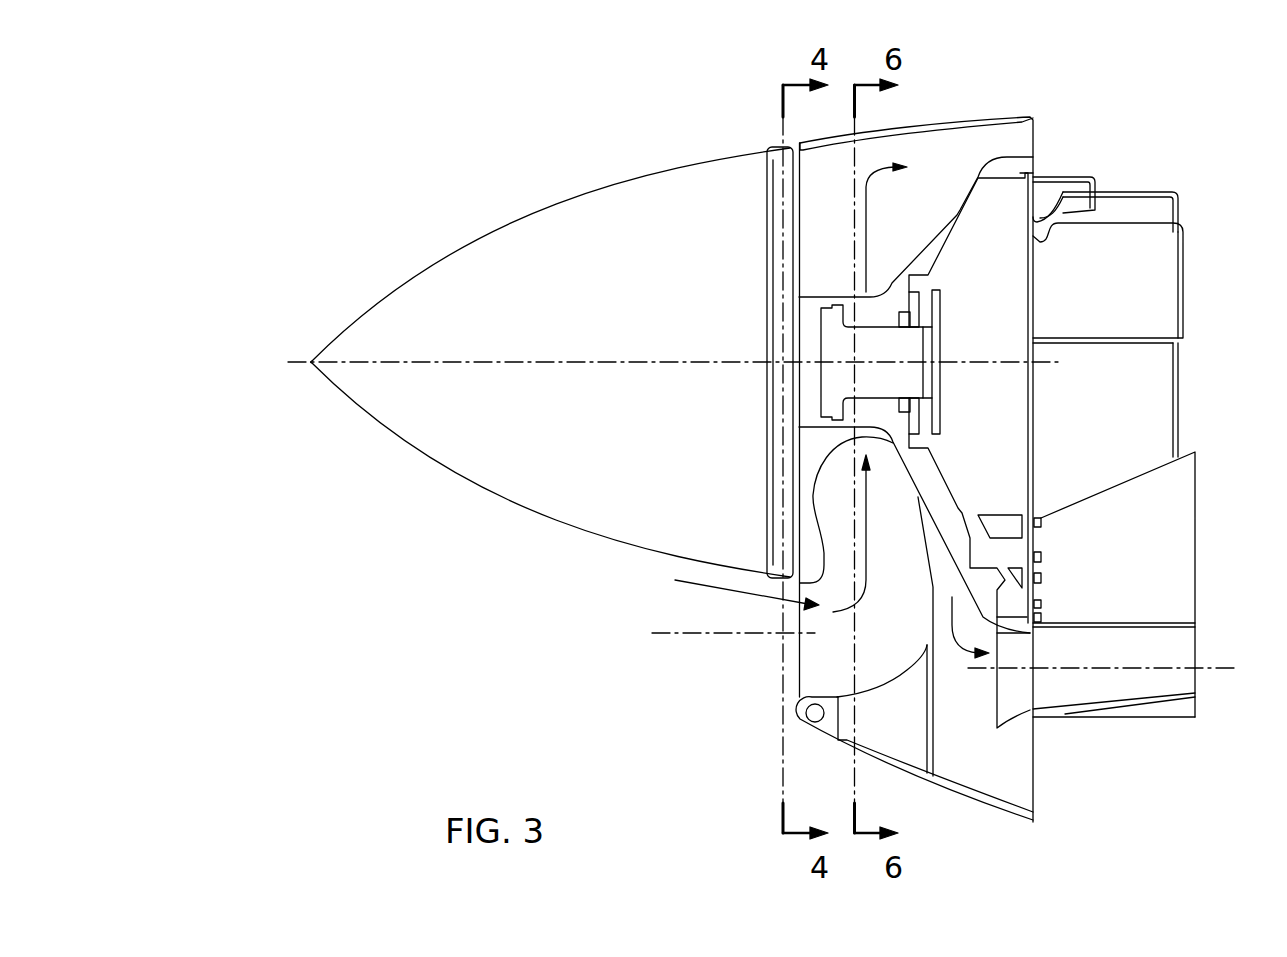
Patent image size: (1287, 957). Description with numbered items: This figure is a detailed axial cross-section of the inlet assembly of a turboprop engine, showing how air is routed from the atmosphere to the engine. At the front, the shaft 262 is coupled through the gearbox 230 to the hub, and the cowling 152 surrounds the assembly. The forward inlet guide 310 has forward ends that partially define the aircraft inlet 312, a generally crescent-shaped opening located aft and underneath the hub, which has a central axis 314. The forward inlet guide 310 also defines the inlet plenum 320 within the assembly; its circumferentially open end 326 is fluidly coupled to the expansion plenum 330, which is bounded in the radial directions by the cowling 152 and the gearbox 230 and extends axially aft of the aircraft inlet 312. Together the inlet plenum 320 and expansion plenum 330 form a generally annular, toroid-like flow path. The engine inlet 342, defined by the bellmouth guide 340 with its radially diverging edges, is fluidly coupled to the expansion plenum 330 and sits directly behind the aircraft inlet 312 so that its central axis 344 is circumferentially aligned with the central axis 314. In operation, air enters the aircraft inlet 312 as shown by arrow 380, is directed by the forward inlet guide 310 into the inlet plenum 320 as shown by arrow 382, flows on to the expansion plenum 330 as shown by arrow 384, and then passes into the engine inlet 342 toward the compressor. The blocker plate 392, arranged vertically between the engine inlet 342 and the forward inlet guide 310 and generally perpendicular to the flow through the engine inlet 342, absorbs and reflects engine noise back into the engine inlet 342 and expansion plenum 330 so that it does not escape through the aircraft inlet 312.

The cowling 152 is at (980, 116).
The gearbox 230 is at (943, 317).
The shaft 262 is at (493, 235).
The forward inlet guide 310 is at (903, 678).
The aircraft inlet 312 is at (798, 674).
The central axis of the aircraft inlet 314 is at (673, 634).
The inlet plenum 320 is at (920, 606).
The open end 326 is at (975, 620).
The expansion plenum 330 is at (848, 215).
The bellmouth guide 340 is at (1005, 718).
The engine inlet 342 is at (995, 703).
The central axis of the engine inlet 344 is at (1220, 670).
The arrow 380 is at (706, 586).
The arrow 382 is at (868, 508).
The arrow 384 is at (867, 212).
The blocker plate 392 is at (925, 693).